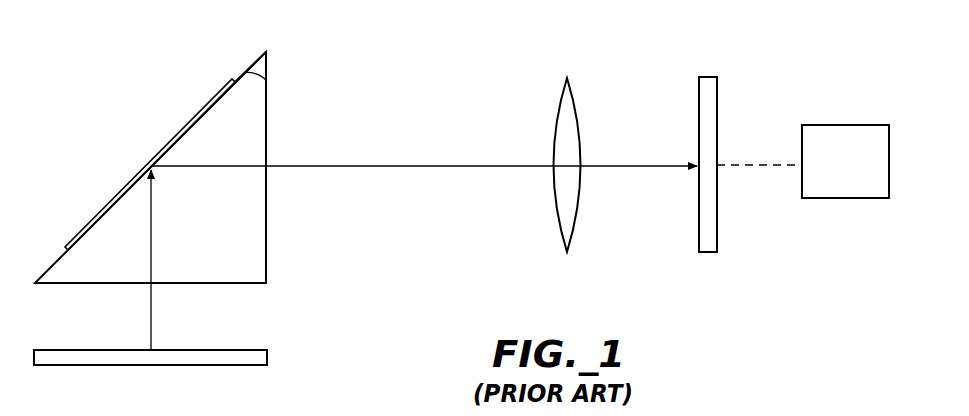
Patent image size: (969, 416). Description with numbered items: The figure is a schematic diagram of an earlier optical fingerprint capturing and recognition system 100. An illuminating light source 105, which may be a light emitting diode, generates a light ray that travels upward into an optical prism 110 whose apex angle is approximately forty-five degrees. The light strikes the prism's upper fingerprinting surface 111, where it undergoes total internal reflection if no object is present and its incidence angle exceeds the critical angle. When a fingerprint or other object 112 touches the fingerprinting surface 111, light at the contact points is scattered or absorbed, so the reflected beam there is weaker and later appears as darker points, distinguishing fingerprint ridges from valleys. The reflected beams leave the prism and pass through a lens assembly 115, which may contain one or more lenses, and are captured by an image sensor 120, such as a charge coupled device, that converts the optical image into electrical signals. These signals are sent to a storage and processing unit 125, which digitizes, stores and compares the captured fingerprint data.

The optical recognition system 100 is at (427, 79).
The illuminating light source 105 is at (192, 366).
The optical prism 110 is at (266, 230).
The fingerprinting surface 111 is at (249, 61).
The object 112 is at (202, 107).
The lens assembly 115 is at (557, 227).
The image sensor 120 is at (700, 225).
The storage and processing unit 125 is at (880, 200).